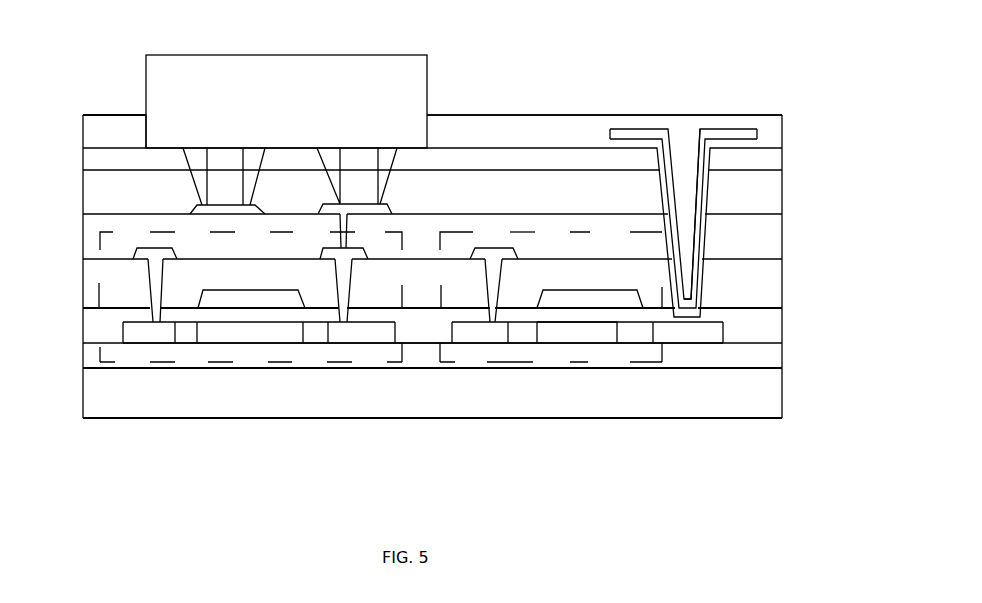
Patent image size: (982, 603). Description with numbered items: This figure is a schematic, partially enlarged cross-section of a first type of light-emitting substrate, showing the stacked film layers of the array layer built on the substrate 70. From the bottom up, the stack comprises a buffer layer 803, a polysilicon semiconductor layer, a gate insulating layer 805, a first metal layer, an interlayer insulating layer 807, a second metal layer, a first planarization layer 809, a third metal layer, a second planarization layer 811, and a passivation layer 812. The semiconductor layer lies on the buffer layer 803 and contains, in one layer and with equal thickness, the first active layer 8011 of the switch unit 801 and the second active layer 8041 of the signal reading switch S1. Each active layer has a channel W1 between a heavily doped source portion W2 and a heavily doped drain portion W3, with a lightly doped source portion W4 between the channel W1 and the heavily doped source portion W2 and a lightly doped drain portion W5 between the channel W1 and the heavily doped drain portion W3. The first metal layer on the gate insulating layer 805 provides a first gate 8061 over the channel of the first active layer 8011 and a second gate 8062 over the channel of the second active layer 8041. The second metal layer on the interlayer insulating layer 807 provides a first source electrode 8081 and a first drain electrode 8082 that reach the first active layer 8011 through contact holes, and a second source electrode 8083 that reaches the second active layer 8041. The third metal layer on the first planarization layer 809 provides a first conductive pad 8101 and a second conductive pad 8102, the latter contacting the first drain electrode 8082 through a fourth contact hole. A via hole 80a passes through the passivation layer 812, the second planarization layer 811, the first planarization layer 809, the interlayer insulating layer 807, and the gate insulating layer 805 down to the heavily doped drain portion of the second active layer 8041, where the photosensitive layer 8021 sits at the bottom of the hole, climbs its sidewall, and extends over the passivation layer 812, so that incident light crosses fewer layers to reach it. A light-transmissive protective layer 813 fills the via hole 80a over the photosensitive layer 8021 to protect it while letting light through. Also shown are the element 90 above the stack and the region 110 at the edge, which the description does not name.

The substrate 70 is at (760, 391).
The buffer layer 803 is at (103, 347).
The gate insulating layer 805 is at (760, 333).
The interlayer insulating layer 807 is at (760, 303).
The first planarization layer 809 is at (760, 244).
The second planarization layer 811 is at (760, 203).
The passivation layer 812 is at (758, 161).
The light-transmissive protective layer 813 is at (757, 133).
The switch unit 801 is at (100, 233).
The first active layer 8011 is at (230, 337).
The second active layer 8041 is at (592, 335).
The first gate 8061 is at (237, 305).
The second gate 8062 is at (584, 300).
The first source electrode 8081 is at (152, 275).
The first drain electrode 8082 is at (345, 280).
The second source electrode 8083 is at (492, 259).
The first conductive pad 8101 is at (217, 213).
The second conductive pad 8102 is at (337, 212).
The photosensitive layer 8021 is at (635, 140).
The via hole 80a is at (700, 288).
The chip 90 is at (292, 80).
The edge region 110 is at (110, 142).
The signal reading switch S1 is at (528, 232).
The channel W1 is at (277, 338).
The heavily doped source portion W2 is at (148, 338).
The heavily doped drain portion W3 is at (368, 338).
The lightly doped source portion W4 is at (187, 338).
The lightly doped drain portion W5 is at (322, 338).